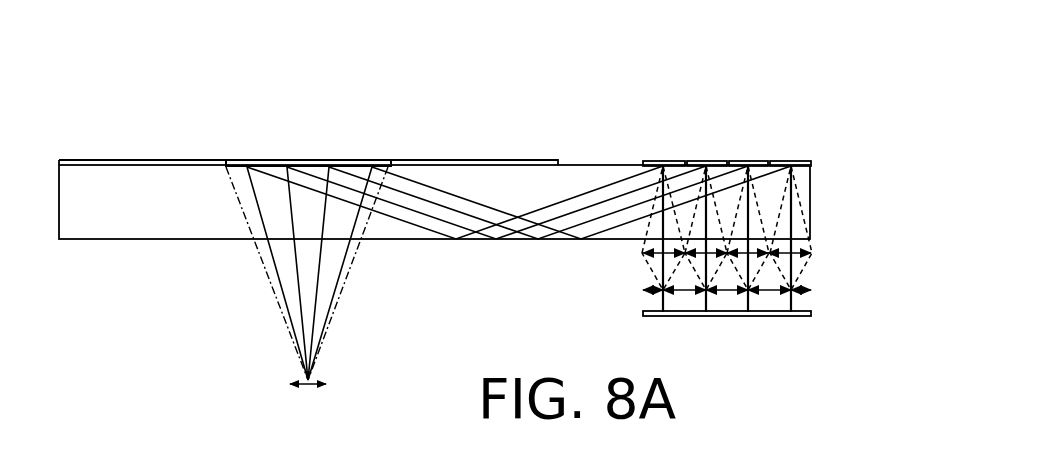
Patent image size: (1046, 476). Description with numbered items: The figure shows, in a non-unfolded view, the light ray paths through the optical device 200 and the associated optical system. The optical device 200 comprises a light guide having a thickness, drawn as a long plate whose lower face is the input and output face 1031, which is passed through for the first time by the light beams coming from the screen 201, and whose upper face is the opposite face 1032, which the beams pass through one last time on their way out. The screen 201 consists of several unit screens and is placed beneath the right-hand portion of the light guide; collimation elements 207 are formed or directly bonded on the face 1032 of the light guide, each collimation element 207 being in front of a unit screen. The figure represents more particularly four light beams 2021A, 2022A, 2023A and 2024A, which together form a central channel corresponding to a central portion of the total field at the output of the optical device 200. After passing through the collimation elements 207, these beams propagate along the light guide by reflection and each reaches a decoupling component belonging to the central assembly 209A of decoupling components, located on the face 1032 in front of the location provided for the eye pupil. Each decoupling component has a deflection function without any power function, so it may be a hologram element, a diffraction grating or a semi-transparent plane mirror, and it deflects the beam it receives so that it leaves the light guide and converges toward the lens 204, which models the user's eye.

The optical device 200 is at (250, 92).
The screen 201 is at (810, 328).
The lens 204 is at (317, 389).
The collimation elements 207 is at (791, 160).
The central assembly of decoupling components 209A is at (313, 160).
The input and output face 1031 is at (140, 240).
The opposite face 1032 is at (588, 164).
The light beam 2021A is at (623, 226).
The light beam 2022A is at (599, 221).
The light beam 2023A is at (577, 213).
The light beam 2024A is at (553, 205).